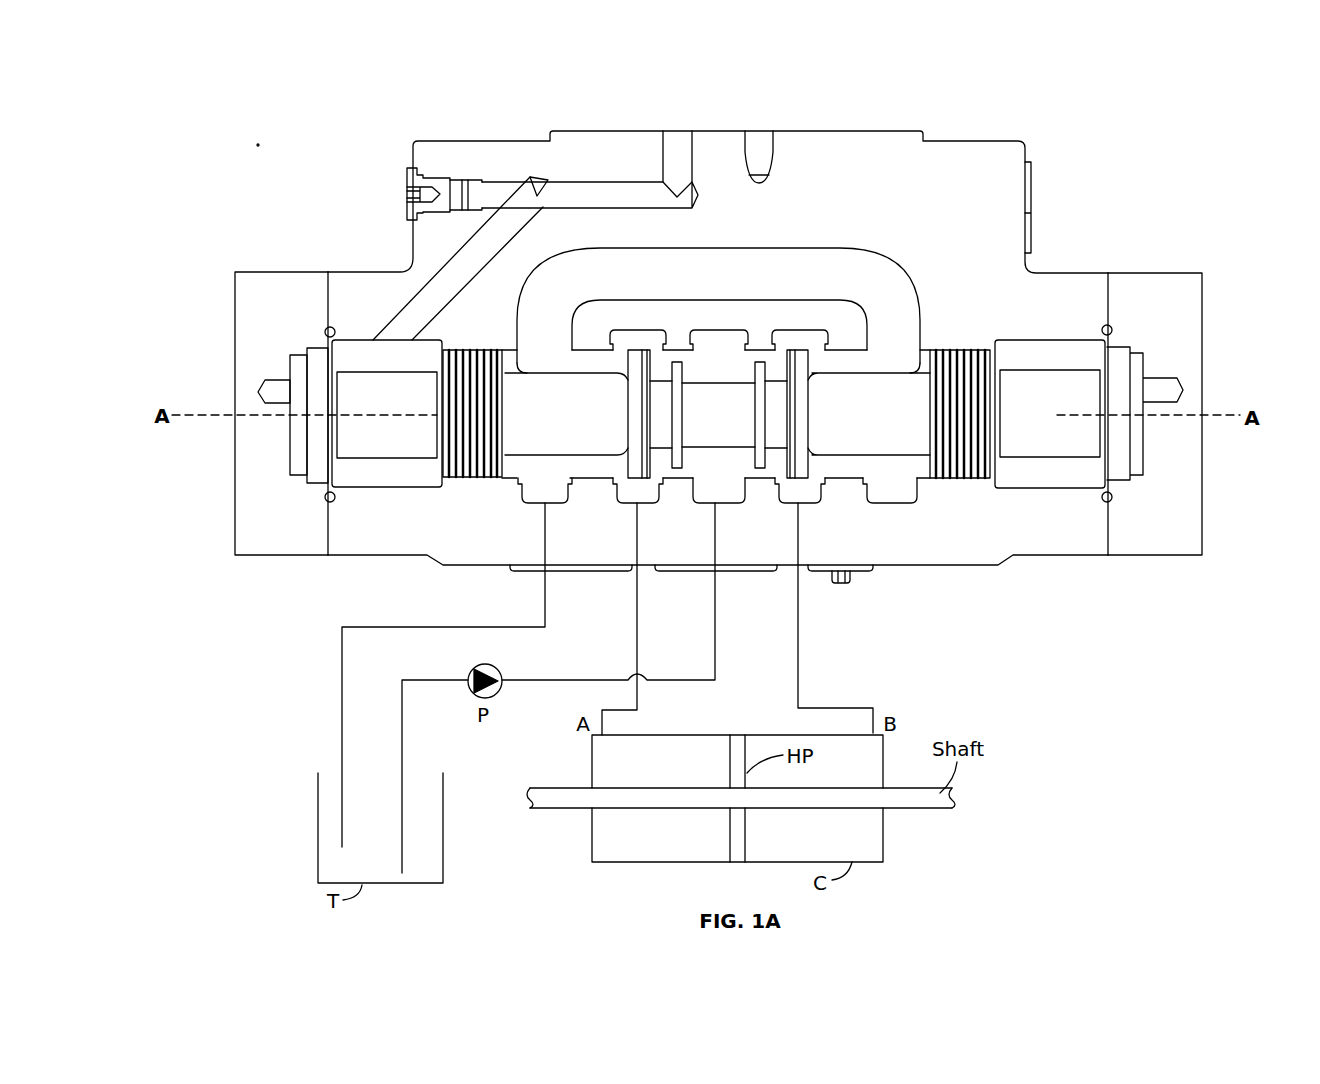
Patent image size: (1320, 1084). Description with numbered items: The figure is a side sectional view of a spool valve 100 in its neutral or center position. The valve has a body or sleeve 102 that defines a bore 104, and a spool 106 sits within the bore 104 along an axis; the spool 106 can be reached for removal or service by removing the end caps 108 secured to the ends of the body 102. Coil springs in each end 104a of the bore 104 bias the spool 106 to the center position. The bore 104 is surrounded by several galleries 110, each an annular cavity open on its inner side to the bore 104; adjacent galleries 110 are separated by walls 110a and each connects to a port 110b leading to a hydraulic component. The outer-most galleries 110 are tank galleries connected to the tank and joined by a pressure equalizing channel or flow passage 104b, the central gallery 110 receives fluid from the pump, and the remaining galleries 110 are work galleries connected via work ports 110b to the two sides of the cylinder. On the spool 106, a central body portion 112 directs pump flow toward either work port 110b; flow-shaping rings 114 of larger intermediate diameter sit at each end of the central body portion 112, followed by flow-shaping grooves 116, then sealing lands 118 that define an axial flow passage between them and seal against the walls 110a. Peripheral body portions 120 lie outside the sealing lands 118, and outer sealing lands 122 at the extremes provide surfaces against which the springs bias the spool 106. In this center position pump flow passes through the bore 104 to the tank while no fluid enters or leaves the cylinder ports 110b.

The spool valve 100 is at (250, 135).
The body or sleeve 102 is at (972, 155).
The bore 104 is at (852, 360).
The end of the bore 104a is at (345, 350).
The pressure equalizing channel or flow passage 104b is at (718, 308).
The spool 106 is at (1073, 445).
The end cap 108 is at (247, 523).
The gallery 110 is at (633, 340).
The wall 110a is at (595, 482).
The port 110b is at (545, 505).
The central body portion 112 is at (718, 414).
The flow-shaping ring 114 is at (673, 360).
The flow-shaping groove 116 is at (663, 427).
The sealing land 118 is at (635, 445).
The peripheral body portion 120 is at (594, 415).
The outer sealing land 122 is at (470, 350).